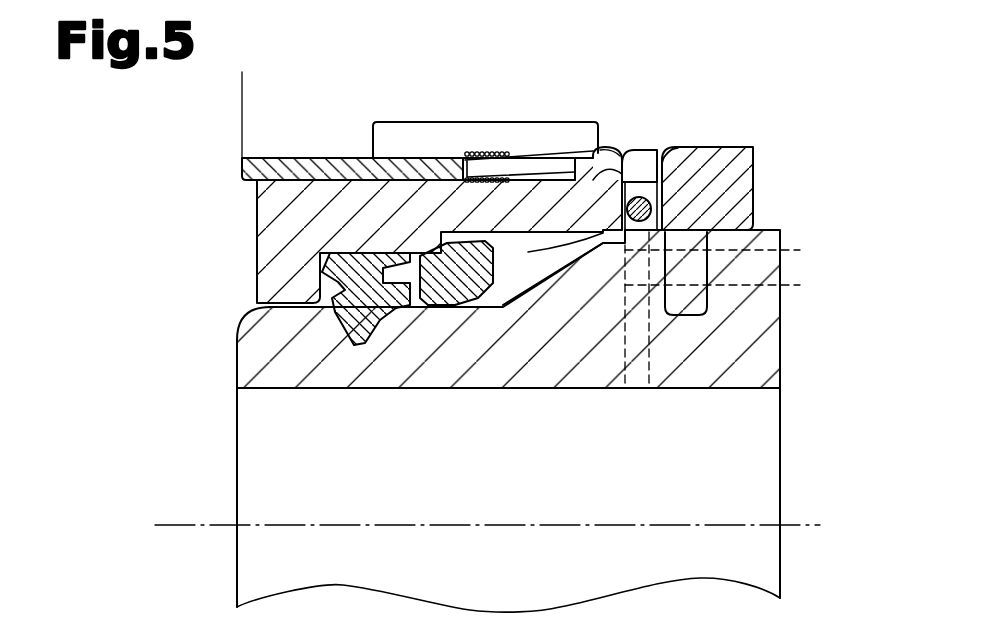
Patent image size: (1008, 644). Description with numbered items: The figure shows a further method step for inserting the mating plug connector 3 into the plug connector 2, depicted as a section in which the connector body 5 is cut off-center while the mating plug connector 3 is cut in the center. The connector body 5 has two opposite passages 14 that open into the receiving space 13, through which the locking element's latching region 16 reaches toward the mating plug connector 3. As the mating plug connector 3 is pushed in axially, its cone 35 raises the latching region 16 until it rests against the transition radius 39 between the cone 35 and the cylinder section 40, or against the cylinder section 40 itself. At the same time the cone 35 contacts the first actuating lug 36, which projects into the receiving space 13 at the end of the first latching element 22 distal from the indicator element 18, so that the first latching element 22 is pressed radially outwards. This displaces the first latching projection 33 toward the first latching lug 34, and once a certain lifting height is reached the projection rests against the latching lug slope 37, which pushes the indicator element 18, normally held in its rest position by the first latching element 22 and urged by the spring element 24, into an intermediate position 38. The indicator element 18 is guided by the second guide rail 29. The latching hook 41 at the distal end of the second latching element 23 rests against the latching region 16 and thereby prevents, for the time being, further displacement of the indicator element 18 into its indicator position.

The plug connector 2 is at (647, 112).
The mating plug connector 3 is at (573, 332).
The connector body 5 is at (318, 197).
The receiving space 13 is at (503, 310).
The passages 14 is at (750, 148).
The latching region 16 is at (657, 212).
The indicator element 18 is at (297, 165).
The first latching element 22 is at (500, 165).
The second latching element 23 is at (663, 153).
The spring element 24 is at (470, 150).
The second guide rail 29 is at (388, 130).
The first latching projection 33 is at (643, 160).
The first latching lug 34 is at (597, 162).
The cone 35 is at (560, 250).
The first actuating lug 36 is at (550, 251).
The latching lug slope 37 is at (616, 158).
The intermediate position 38 is at (242, 97).
The transition radius 39 is at (800, 248).
The cylinder section 40 is at (800, 285).
The latching hook 41 is at (655, 182).